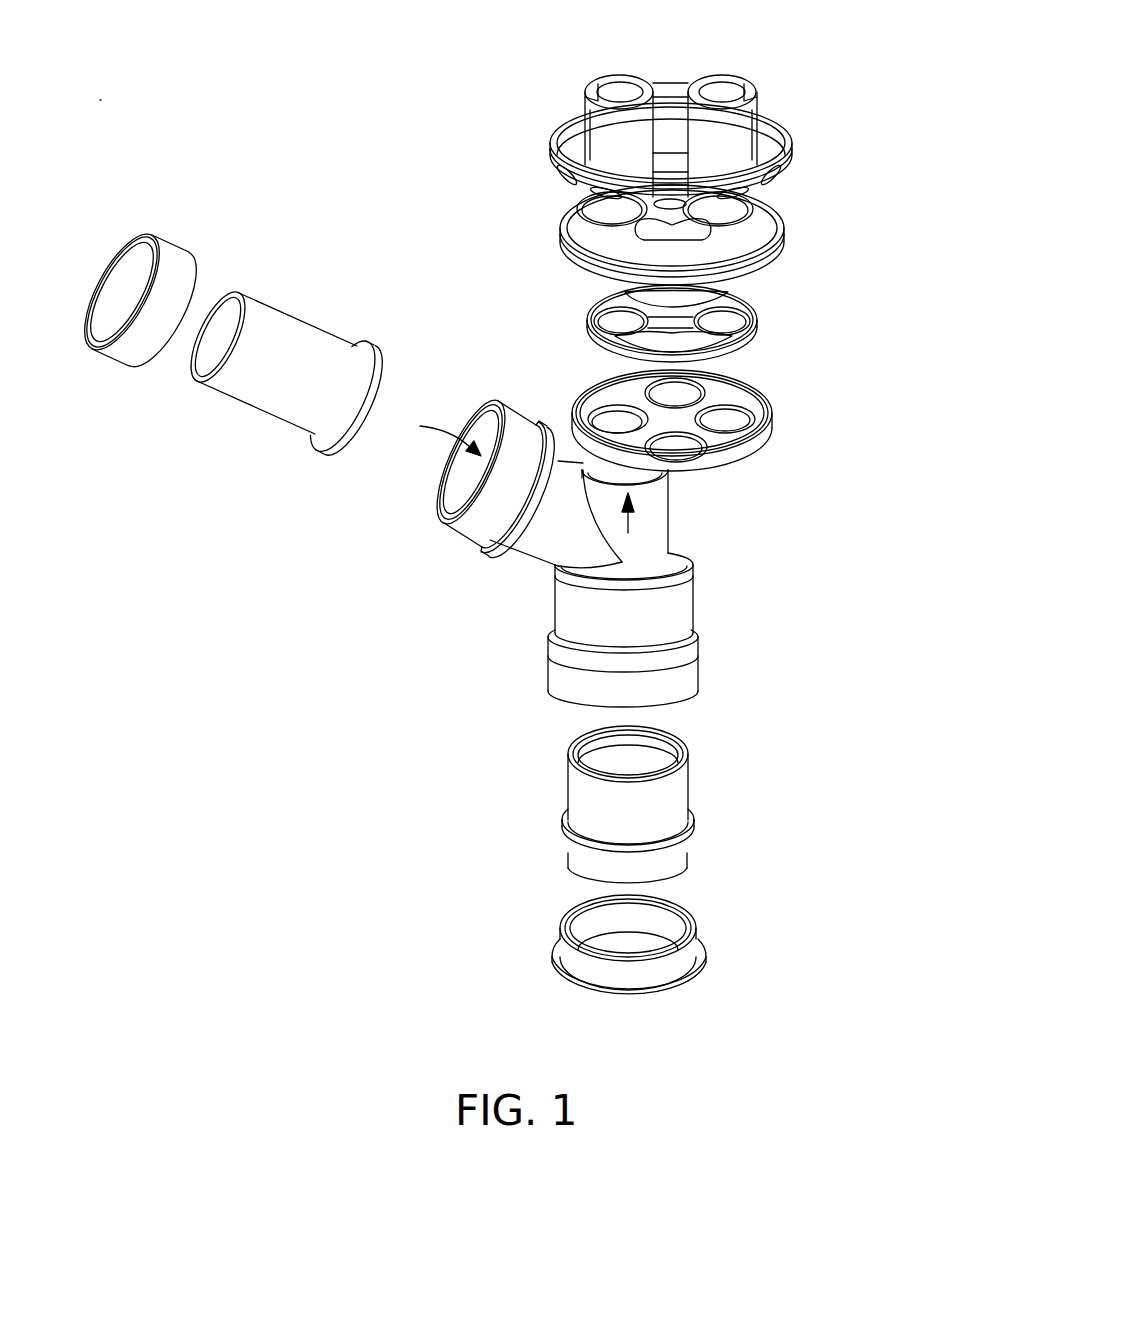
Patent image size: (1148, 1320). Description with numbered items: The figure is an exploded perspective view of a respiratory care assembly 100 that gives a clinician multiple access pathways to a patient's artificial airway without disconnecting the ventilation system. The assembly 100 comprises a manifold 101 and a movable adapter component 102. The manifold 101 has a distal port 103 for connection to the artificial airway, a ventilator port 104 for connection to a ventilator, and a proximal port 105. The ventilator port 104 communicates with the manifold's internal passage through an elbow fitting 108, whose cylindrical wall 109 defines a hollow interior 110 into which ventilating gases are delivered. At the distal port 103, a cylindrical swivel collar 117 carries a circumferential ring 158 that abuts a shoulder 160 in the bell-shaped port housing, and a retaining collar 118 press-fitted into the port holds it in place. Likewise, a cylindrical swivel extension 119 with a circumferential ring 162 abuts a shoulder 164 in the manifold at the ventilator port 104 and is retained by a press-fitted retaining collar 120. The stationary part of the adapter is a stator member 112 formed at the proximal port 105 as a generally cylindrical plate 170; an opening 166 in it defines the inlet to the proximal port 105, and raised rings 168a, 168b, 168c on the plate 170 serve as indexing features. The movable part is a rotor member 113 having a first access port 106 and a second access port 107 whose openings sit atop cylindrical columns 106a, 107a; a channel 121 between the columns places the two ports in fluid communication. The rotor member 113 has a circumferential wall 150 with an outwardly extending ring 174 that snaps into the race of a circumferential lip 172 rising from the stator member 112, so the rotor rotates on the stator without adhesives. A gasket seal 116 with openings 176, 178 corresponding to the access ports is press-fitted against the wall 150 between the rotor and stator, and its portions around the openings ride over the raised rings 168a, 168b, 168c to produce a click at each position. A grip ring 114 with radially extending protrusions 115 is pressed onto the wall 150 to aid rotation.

The respiratory care assembly 100 is at (330, 173).
The manifold 101 is at (658, 520).
The movable adapter component 102 is at (802, 173).
The distal port 103 is at (683, 693).
The ventilator port 104 is at (467, 492).
The proximal port 105 is at (610, 428).
The first access port 106 is at (617, 95).
The cylindrical column 106a is at (617, 128).
The second access port 107 is at (722, 92).
The cylindrical column 107a is at (740, 127).
The elbow fitting 108 is at (592, 552).
The cylindrical wall 109 is at (555, 538).
The hollow interior 110 is at (432, 438).
The stator member 112 is at (748, 453).
The rotor member 113 is at (590, 228).
The grip ring 114 is at (560, 167).
The radially extending protrusions 115 is at (553, 145).
The seal 116 is at (607, 342).
The swivel collar 117 is at (670, 817).
The retaining collar 118 is at (683, 957).
The swivel extension 119 is at (257, 402).
The retaining collar 120 is at (130, 347).
The channel 121 is at (677, 233).
The circumferential wall 150 is at (590, 257).
The circumferential ring 158 is at (565, 818).
The shoulder 160 is at (687, 645).
The circumferential ring 162 is at (320, 450).
The shoulder 164 is at (508, 538).
The opening 166 is at (623, 417).
The raised ring 168a is at (683, 390).
The raised ring 168b is at (737, 422).
The raised ring 168c is at (668, 452).
The cylindrical plate 170 is at (743, 435).
The circumferential lip 172 is at (720, 457).
The outwardly extending ring 174 is at (575, 265).
The opening 176 is at (622, 328).
The opening 178 is at (728, 323).